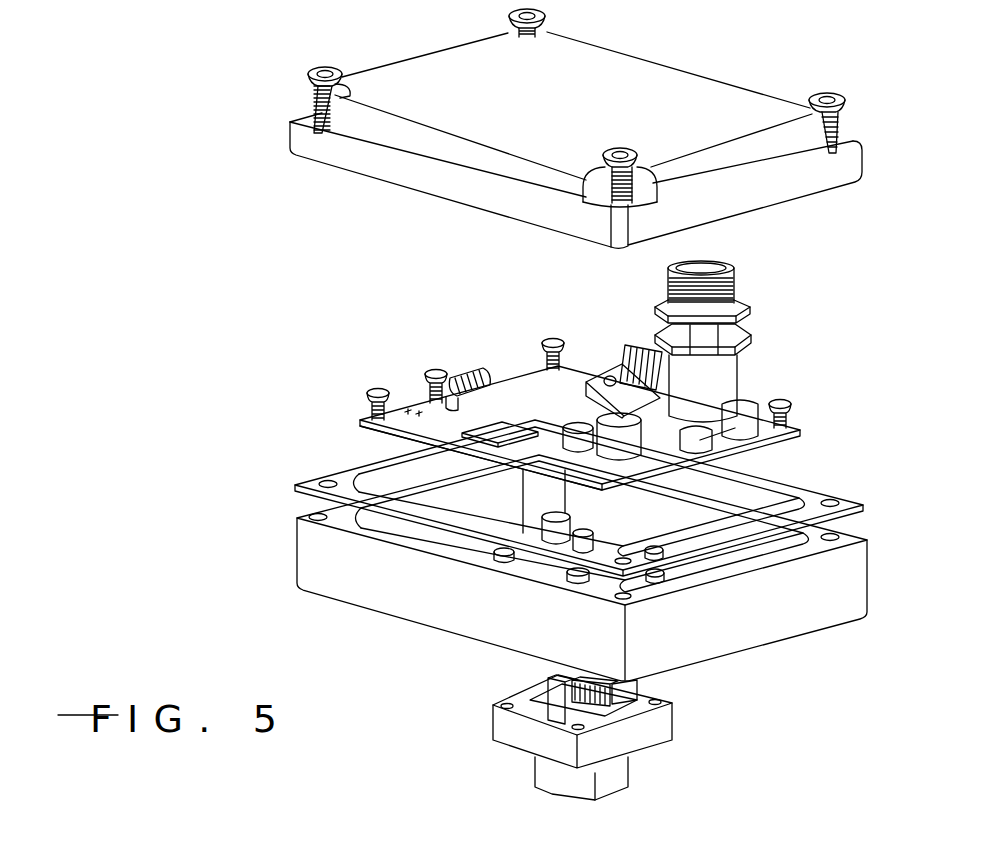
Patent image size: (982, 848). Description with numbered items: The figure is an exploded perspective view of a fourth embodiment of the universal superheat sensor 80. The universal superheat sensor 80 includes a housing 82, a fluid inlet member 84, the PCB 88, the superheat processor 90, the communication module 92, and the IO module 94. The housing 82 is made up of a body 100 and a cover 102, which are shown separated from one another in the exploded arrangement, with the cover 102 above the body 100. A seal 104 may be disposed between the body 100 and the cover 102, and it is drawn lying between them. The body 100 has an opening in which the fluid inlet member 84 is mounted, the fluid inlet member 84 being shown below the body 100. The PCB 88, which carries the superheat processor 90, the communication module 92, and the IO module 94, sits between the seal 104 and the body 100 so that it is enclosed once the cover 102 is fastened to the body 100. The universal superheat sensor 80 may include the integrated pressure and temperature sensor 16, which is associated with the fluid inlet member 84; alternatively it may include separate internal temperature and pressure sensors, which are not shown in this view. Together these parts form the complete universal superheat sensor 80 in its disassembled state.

The integrated pressure and temperature sensor 16 is at (650, 694).
The universal superheat sensor 80 is at (272, 208).
The housing 82 is at (292, 565).
The fluid inlet member 84 is at (540, 773).
The PCB 88 is at (512, 390).
The superheat processor 90 is at (413, 437).
The communication module 92 is at (584, 372).
The IO module 94 is at (725, 372).
The body 100 is at (850, 580).
The cover 102 is at (697, 90).
The seal 104 is at (850, 502).